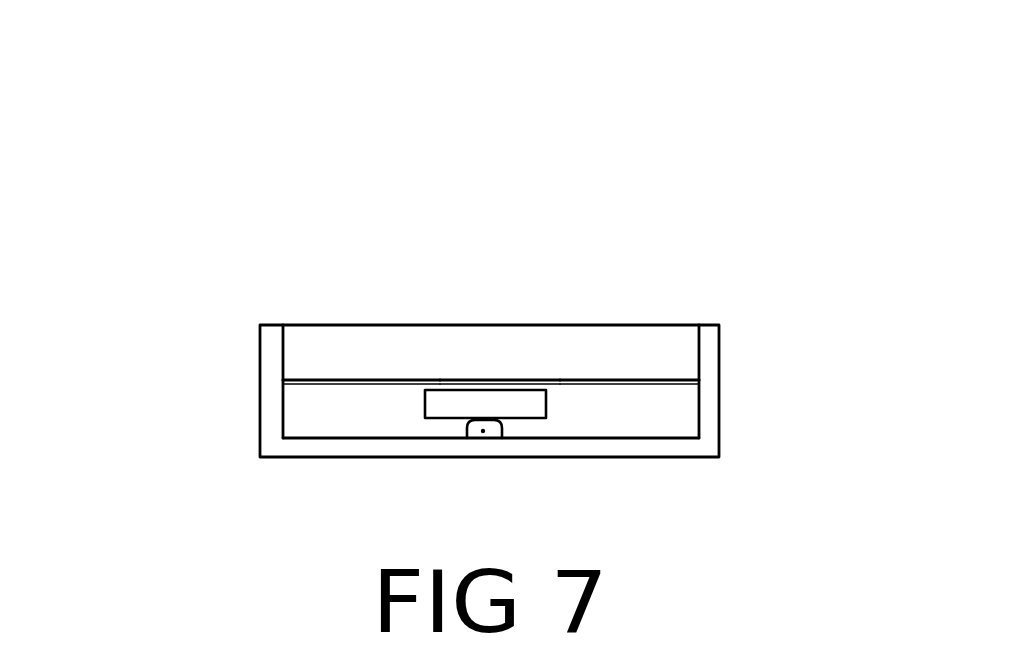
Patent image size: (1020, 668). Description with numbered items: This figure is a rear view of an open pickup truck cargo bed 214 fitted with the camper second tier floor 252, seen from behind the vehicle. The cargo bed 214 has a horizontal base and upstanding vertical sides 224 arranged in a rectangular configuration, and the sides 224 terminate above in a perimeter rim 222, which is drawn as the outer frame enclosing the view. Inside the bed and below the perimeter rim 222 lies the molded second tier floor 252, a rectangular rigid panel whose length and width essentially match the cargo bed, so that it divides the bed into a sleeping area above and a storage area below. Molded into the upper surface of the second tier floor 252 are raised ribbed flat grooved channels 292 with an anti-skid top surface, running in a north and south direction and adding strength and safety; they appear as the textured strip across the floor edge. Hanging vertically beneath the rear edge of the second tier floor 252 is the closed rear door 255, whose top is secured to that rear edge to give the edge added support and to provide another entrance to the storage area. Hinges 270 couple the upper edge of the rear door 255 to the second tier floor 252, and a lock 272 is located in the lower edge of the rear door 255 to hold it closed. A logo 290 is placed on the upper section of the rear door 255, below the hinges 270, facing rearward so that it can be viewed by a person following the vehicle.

The perimeter rim 222 is at (250, 323).
The open pickup truck cargo bed 214 is at (310, 352).
The upstanding vertical sides 224 is at (727, 379).
The rear door 255 is at (648, 428).
The hinges 270 is at (377, 372).
The raised ribbed flat grooved channels 292 is at (459, 380).
The second tier floor 252 is at (653, 372).
The logo 290 is at (517, 388).
The lock 272 is at (465, 443).